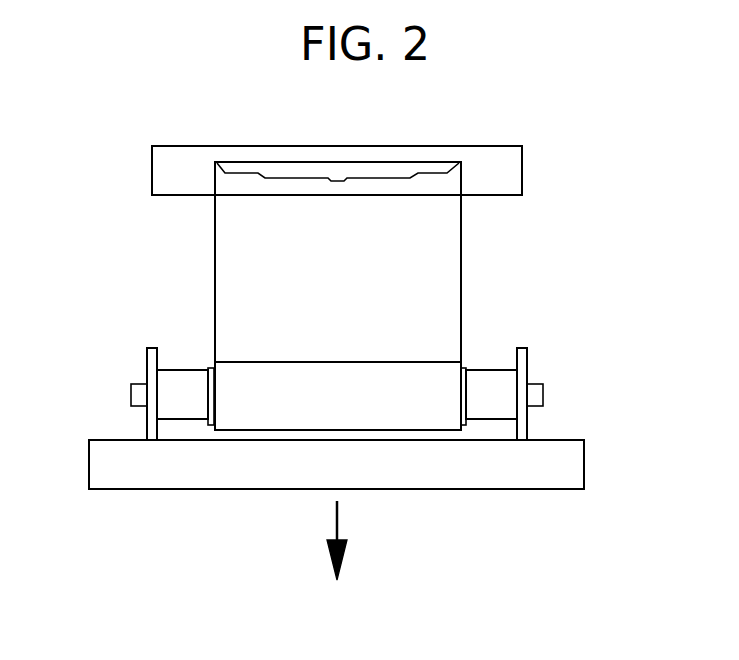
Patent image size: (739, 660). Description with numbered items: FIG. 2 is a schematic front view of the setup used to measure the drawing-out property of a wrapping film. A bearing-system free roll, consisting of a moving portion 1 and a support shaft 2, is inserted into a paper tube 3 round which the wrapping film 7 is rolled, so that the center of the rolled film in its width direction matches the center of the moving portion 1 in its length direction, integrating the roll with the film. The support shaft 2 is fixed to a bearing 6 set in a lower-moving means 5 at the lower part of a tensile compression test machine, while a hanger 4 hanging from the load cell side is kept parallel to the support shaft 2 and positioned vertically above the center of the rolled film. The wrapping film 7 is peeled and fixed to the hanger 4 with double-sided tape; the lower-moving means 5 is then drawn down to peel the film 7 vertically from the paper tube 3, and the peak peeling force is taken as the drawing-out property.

The moving portion of the free roll 1 is at (490, 370).
The support shaft 2 is at (546, 393).
The paper tube 3 is at (210, 370).
The hanger 4 is at (152, 176).
The lower-moving means 5 is at (585, 455).
The bearing 6 is at (147, 362).
The wrapping film 7 is at (215, 266).